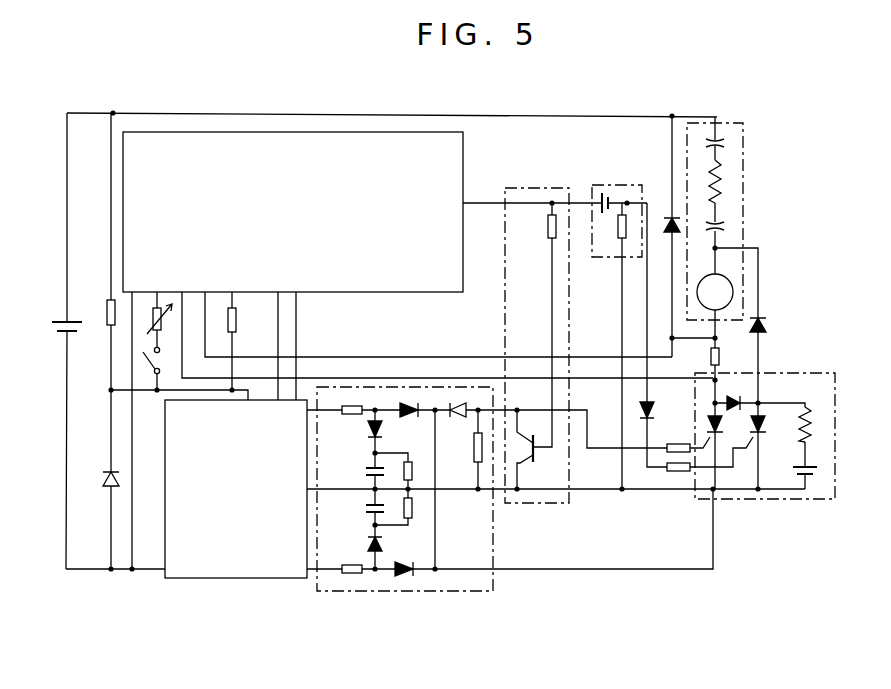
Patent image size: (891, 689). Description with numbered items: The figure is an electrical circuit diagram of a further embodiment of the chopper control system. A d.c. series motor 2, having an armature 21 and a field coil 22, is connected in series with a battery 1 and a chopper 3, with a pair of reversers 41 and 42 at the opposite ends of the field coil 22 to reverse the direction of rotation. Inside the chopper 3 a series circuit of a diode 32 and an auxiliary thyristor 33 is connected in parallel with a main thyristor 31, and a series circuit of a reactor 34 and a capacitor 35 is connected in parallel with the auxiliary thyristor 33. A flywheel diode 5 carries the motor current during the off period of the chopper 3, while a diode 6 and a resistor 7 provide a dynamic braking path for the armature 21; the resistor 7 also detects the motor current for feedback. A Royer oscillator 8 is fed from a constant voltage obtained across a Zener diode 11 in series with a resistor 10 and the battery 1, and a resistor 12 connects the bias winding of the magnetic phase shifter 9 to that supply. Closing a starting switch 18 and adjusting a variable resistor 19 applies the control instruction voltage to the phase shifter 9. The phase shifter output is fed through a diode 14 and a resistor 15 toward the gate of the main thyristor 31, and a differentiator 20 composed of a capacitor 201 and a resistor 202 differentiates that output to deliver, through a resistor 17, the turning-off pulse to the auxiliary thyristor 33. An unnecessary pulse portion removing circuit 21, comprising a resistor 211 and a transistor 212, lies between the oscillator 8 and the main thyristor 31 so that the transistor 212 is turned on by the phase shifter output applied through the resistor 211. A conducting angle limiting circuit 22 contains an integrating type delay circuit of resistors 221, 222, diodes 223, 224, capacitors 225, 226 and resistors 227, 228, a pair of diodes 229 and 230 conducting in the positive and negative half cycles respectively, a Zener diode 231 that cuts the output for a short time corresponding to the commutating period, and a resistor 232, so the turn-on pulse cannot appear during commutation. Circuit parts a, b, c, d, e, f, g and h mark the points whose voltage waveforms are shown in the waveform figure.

The battery 1 is at (52, 326).
The d.c. series motor 2 is at (745, 240).
The chopper 3 is at (790, 499).
The flywheel diode 5 is at (664, 232).
The diode 6 is at (766, 326).
The resistor 7 is at (719, 358).
The oscillator 8 is at (262, 578).
The magnetic phase shifter 9 is at (232, 132).
The resistor 10 is at (107, 306).
The Zener diode 11 is at (103, 478).
The resistor 12 is at (236, 320).
The diode 14 is at (654, 412).
The resistor 15 is at (667, 446).
The resistor 17 is at (676, 471).
The starting switch 18 is at (147, 368).
The variable resistor 19 is at (153, 319).
The differentiator 20 is at (590, 257).
The unnecessary pulse portion removing circuit 21 is at (549, 173).
The conducting angle limiting circuit 22 is at (486, 591).
The main thyristor 31 is at (707, 424).
The diode 32 is at (735, 394).
The auxiliary thyristor 33 is at (764, 426).
The reactor 34 is at (811, 424).
The capacitor 35 is at (818, 471).
The reverser 41 is at (726, 142).
The reverser 42 is at (726, 227).
The capacitor 201 is at (600, 192).
The resistor 202 is at (628, 218).
The resistor 211 is at (548, 224).
The transistor 212 is at (540, 462).
The resistor 221 is at (352, 414).
The resistor 222 is at (368, 444).
The diode 223 is at (366, 471).
The diode 224 is at (412, 470).
The capacitor 225 is at (346, 565).
The capacitor 226 is at (368, 541).
The resistor 227 is at (366, 508).
The resistor 228 is at (412, 510).
The diode 229 is at (410, 417).
The diode 230 is at (408, 576).
The Zener diode 231 is at (460, 424).
The resistor 232 is at (474, 450).
The circuit part a is at (333, 396).
The circuit part b is at (328, 580).
The circuit part c is at (383, 396).
The circuit part d is at (375, 580).
The circuit part e is at (432, 396).
The circuit part f is at (474, 205).
The circuit part g is at (587, 412).
The circuit part h is at (647, 462).